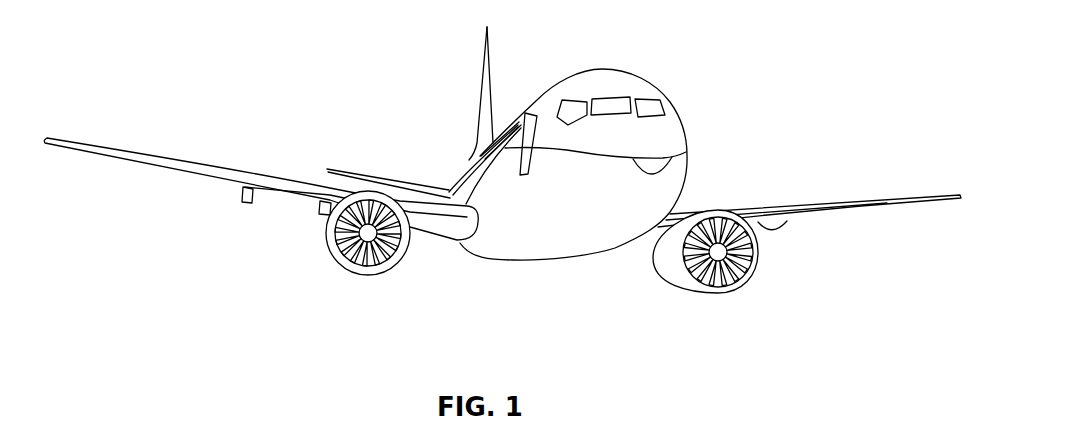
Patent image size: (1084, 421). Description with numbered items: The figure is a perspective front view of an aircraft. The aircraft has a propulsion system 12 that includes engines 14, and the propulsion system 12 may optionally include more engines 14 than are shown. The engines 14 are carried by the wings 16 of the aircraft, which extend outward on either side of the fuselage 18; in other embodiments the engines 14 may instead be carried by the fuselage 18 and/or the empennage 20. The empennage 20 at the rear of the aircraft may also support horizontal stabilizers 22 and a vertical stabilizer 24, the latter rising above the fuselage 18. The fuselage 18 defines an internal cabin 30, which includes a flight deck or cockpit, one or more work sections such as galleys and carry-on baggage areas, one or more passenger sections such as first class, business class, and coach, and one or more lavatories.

The propulsion system 12 is at (502, 178).
The engines 14 is at (362, 275).
The wings 16 is at (168, 165).
The fuselage 18 is at (682, 128).
The empennage 20 is at (473, 153).
The horizontal stabilizers 22 is at (360, 172).
The vertical stabilizer 24 is at (483, 62).
The internal cabin 30 is at (613, 100).